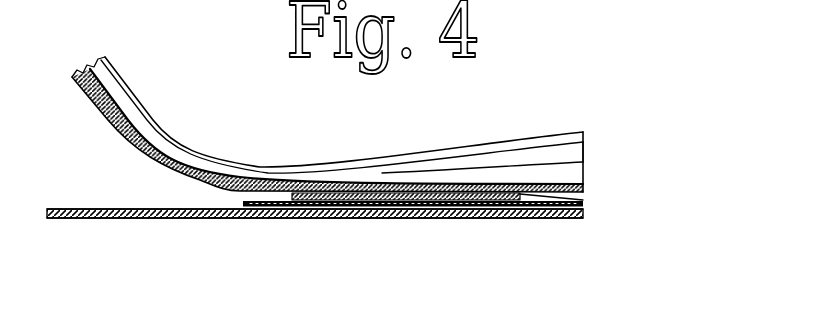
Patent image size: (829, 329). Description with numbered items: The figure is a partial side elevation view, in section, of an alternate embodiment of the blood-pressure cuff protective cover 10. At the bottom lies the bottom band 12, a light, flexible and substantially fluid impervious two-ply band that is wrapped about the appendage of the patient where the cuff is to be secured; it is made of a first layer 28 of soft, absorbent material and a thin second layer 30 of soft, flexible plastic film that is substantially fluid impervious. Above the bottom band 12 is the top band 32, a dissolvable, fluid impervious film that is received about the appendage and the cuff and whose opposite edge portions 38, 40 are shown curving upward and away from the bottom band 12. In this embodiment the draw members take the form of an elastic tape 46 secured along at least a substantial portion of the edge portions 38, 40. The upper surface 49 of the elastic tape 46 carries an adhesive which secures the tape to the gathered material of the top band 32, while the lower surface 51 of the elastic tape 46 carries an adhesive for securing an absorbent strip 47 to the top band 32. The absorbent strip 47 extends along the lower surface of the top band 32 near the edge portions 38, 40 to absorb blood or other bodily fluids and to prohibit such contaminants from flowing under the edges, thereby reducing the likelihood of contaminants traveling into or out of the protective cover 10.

The protective cover 10 is at (563, 104).
The bottom band 12 is at (147, 220).
The first layer 28 is at (100, 219).
The second layer 30 is at (100, 209).
The top band 32 is at (113, 72).
The first edge portion 38 is at (585, 159).
The second edge portion 40 is at (643, 126).
The elastic tape 46 is at (557, 218).
The absorbent strip 47 is at (243, 202).
The upper surface 49 is at (364, 193).
The lower surface 51 is at (355, 207).